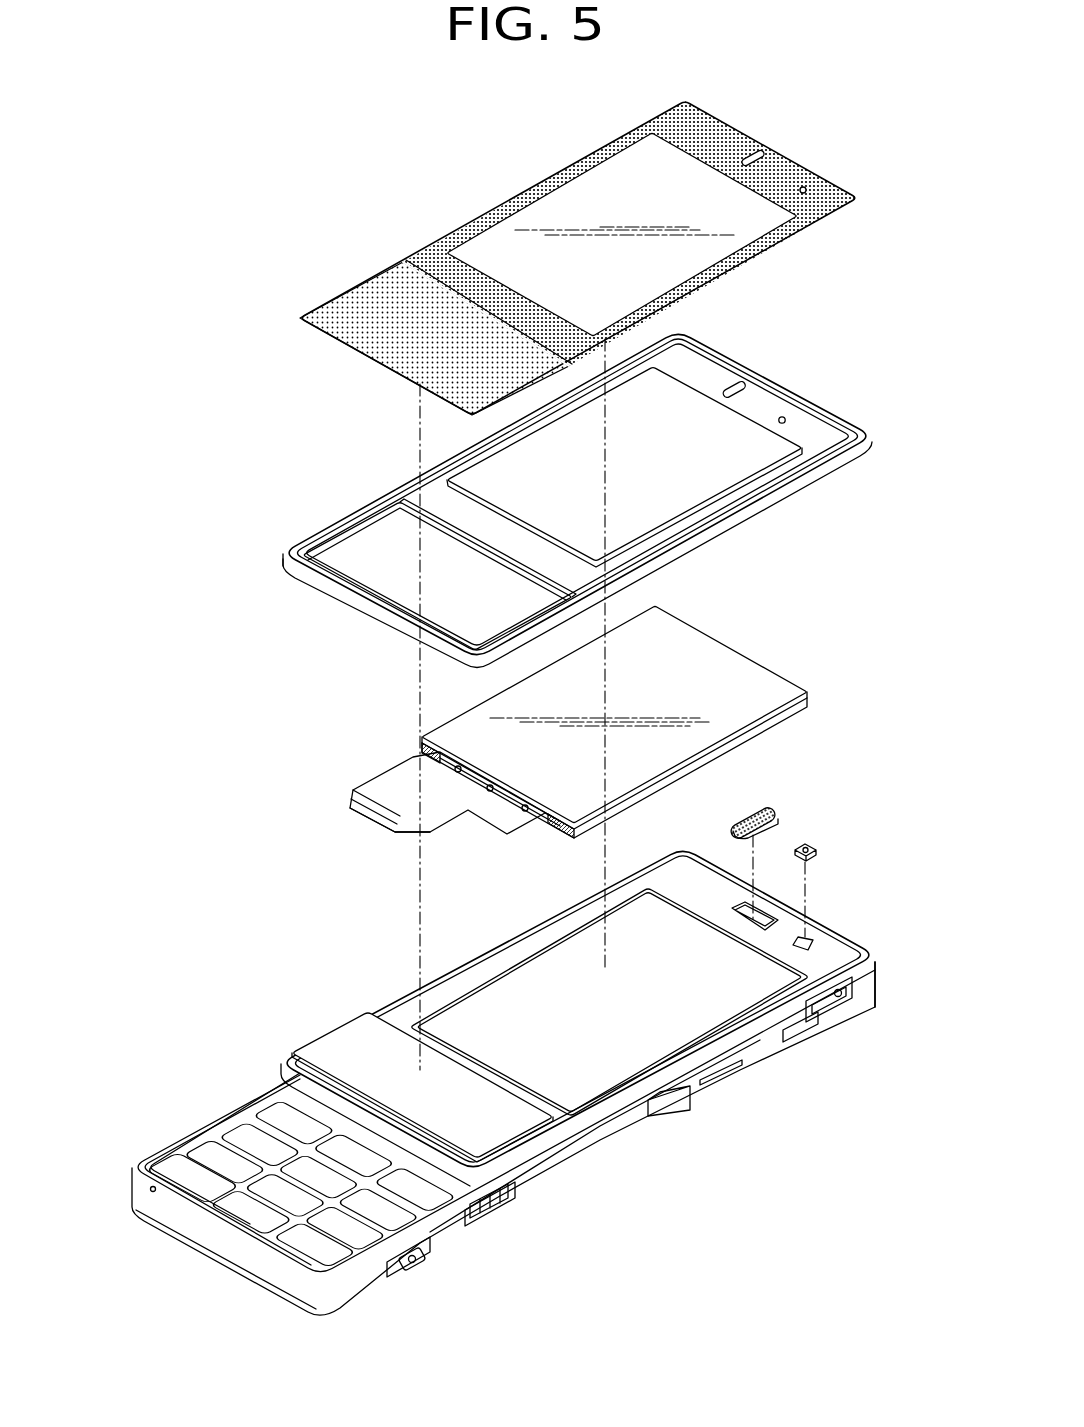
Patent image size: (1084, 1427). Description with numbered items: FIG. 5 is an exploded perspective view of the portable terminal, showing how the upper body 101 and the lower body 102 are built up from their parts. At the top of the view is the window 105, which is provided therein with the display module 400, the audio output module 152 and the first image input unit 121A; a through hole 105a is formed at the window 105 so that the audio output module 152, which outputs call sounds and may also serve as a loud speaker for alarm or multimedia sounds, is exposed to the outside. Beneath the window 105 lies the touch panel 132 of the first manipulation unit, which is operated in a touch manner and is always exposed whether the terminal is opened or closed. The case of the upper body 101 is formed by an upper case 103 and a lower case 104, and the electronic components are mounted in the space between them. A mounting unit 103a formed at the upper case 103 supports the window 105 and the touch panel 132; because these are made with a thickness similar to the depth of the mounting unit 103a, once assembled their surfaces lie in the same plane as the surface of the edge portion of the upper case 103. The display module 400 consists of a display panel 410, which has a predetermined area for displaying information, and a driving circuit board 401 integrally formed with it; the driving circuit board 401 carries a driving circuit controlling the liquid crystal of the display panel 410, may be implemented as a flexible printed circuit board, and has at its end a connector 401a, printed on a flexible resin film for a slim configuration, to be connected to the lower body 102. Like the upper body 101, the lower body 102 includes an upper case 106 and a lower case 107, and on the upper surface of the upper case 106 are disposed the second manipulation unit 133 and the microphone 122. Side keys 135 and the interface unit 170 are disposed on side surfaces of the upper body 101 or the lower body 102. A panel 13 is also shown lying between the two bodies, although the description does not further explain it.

The window 105 is at (716, 131).
The through hole 105a is at (763, 161).
The touch panel 132 is at (362, 298).
The mounting unit 103a is at (716, 361).
The upper case 103 is at (868, 434).
The display module 400 is at (562, 728).
The display panel 410 is at (763, 683).
The driving circuit board 401 is at (393, 781).
The connector 401a is at (373, 820).
The audio output module 152 is at (760, 820).
The first image input unit 121A is at (810, 849).
The lower case 104 is at (858, 946).
The upper body 101 is at (876, 1010).
The interface unit 170 is at (832, 1010).
The panel 13 is at (340, 1037).
The second manipulation unit 133 is at (258, 1118).
The lower body 102 is at (183, 1129).
The microphone 122 is at (150, 1190).
The upper case 106 is at (607, 1142).
The lower case 107 is at (553, 1192).
The side keys 135 is at (413, 1260).